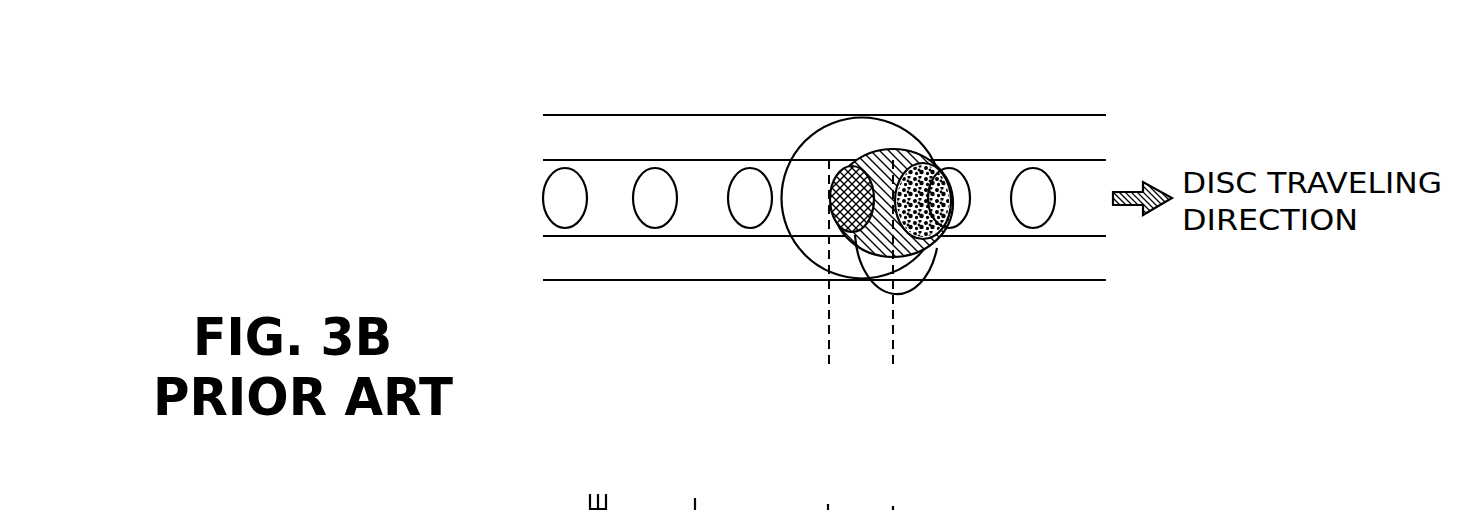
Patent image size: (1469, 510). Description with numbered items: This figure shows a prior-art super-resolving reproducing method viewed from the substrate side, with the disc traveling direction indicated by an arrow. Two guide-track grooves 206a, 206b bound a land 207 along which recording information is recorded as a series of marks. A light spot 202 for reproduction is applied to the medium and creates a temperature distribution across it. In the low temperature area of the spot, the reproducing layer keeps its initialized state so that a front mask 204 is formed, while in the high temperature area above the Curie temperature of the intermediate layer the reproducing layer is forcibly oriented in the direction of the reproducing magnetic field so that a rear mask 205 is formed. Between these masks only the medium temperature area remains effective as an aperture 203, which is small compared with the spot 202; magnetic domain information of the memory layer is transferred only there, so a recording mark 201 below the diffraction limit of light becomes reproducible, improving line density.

The recording mark 201 is at (893, 280).
The light spot 202 is at (801, 252).
The aperture 203 is at (907, 150).
The front mask 204 is at (830, 147).
The rear mask 205 is at (947, 163).
The groove 206a is at (701, 137).
The groove 206b is at (701, 258).
The land 207 is at (694, 198).